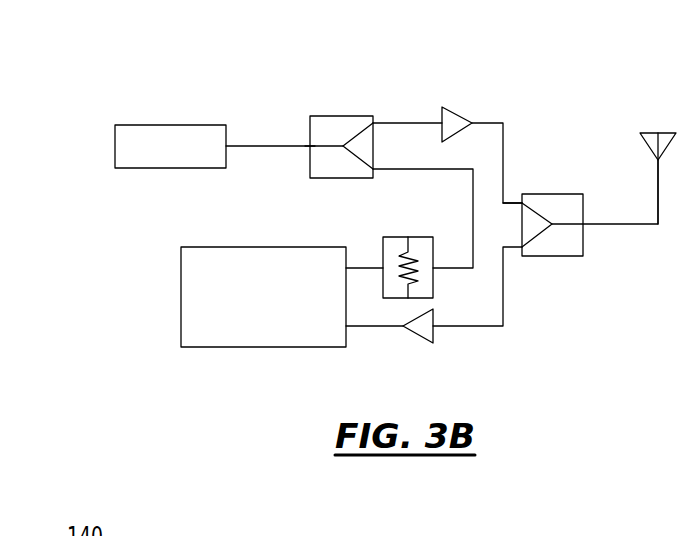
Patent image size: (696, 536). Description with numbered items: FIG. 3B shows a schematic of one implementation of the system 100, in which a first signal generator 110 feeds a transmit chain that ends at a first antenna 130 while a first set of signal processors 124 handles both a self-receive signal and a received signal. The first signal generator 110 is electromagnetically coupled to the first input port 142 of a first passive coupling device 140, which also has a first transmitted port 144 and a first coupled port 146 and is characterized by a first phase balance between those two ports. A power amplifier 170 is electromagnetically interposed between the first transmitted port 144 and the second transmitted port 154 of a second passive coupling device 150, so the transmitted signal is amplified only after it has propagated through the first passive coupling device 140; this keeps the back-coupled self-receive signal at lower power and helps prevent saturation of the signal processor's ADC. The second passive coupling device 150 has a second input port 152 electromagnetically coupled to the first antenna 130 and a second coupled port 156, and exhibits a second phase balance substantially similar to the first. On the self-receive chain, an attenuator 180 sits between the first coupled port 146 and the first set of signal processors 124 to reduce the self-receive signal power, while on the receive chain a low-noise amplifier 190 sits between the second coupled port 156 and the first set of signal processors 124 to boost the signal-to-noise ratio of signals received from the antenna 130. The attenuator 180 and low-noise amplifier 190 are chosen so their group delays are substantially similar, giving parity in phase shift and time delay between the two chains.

The system 100 is at (111, 51).
The first signal generator 110 is at (172, 125).
The first set of signal processors 124 is at (243, 347).
The first antenna 130 is at (647, 132).
The first passive coupling device 140 is at (347, 116).
The first input port 142 is at (310, 145).
The first transmitted port 144 is at (373, 123).
The first coupled port 146 is at (378, 170).
The second passive coupling device 150 is at (567, 194).
The second input port 152 is at (583, 243).
The second transmitted port 154 is at (506, 202).
The second coupled port 156 is at (512, 249).
The power amplifier 170 is at (447, 107).
The attenuator 180 is at (417, 237).
The low-noise amplifier 190 is at (433, 336).